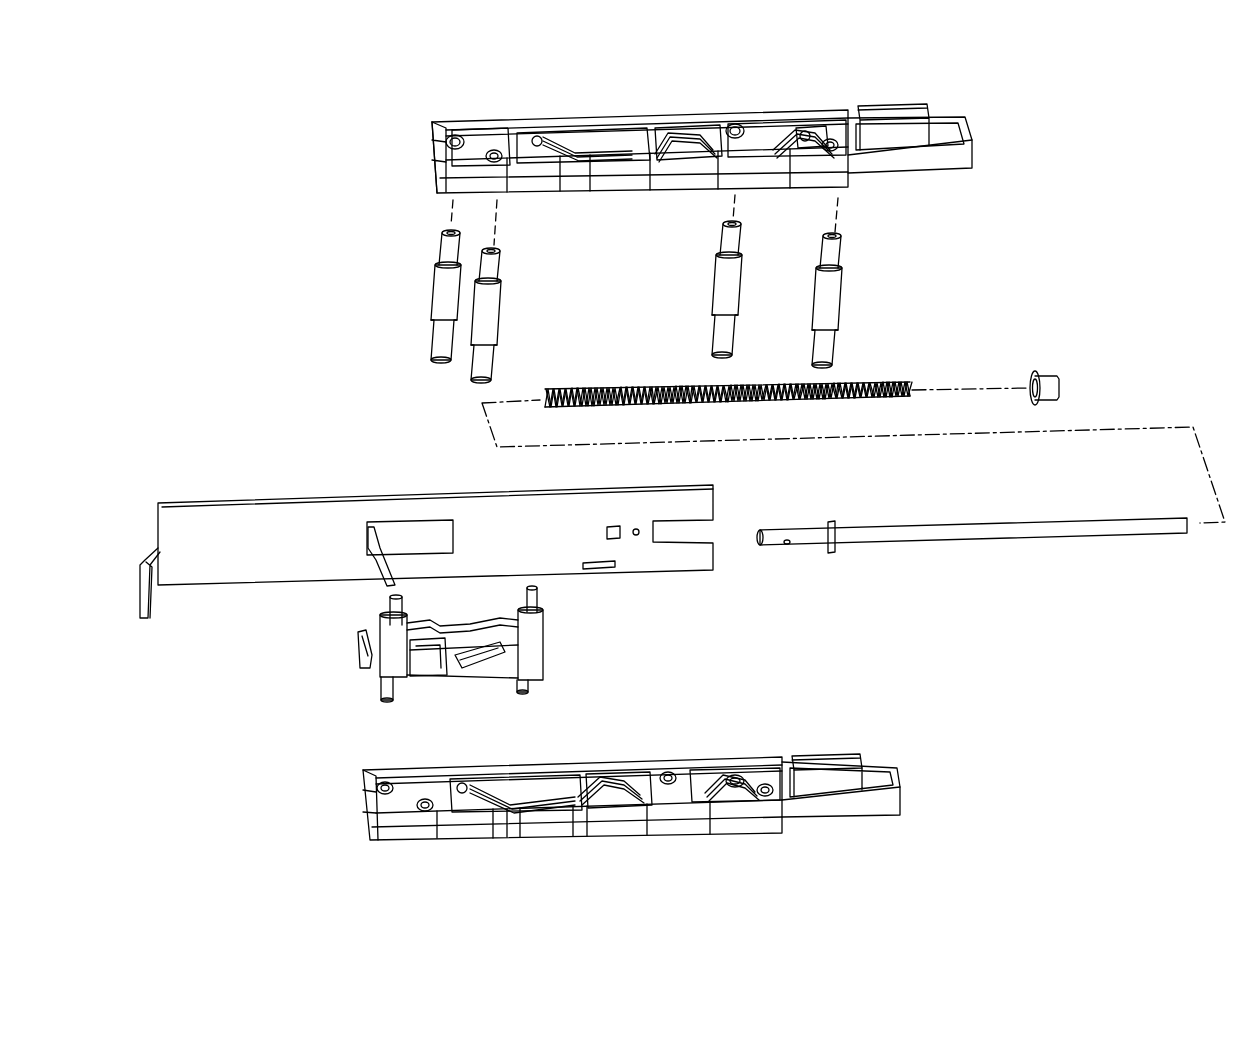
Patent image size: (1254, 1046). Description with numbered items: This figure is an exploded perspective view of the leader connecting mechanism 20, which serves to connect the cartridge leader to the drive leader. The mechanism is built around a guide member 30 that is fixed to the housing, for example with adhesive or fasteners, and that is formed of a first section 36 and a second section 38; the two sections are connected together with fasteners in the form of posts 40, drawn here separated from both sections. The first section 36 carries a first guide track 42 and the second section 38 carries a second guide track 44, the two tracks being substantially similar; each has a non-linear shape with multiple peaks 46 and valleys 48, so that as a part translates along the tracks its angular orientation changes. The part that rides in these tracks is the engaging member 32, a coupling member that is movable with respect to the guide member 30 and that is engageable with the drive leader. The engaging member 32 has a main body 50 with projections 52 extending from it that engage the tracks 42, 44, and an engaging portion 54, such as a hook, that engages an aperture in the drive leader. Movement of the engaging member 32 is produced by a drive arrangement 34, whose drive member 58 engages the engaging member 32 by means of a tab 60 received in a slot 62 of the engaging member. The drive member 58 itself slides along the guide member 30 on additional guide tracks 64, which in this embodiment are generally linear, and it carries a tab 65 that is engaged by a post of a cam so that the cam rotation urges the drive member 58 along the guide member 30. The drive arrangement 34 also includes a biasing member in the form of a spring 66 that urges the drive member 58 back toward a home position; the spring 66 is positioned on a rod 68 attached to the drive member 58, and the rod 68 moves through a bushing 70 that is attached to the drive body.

The leader connecting mechanism 20 is at (995, 86).
The guide member 30 is at (988, 143).
The engaging member 32 is at (428, 690).
The drive arrangement 34 is at (146, 534).
The first section 36 is at (972, 165).
The second section 38 is at (905, 808).
The posts 40 is at (430, 292).
The first guide track 42 is at (812, 128).
The second guide track 44 is at (735, 785).
The peaks 46 is at (532, 132).
The valleys 48 is at (618, 140).
The main body 50 is at (545, 635).
The projections 52 is at (540, 598).
The engaging portion 54 is at (470, 680).
The drive member 58 is at (158, 508).
The tab 60 is at (378, 584).
The slot 62 is at (362, 665).
The guide tracks 64 is at (430, 148).
The tab 65 is at (140, 588).
The spring 66 is at (897, 375).
The rod 68 is at (1078, 522).
The bushing 70 is at (1050, 372).